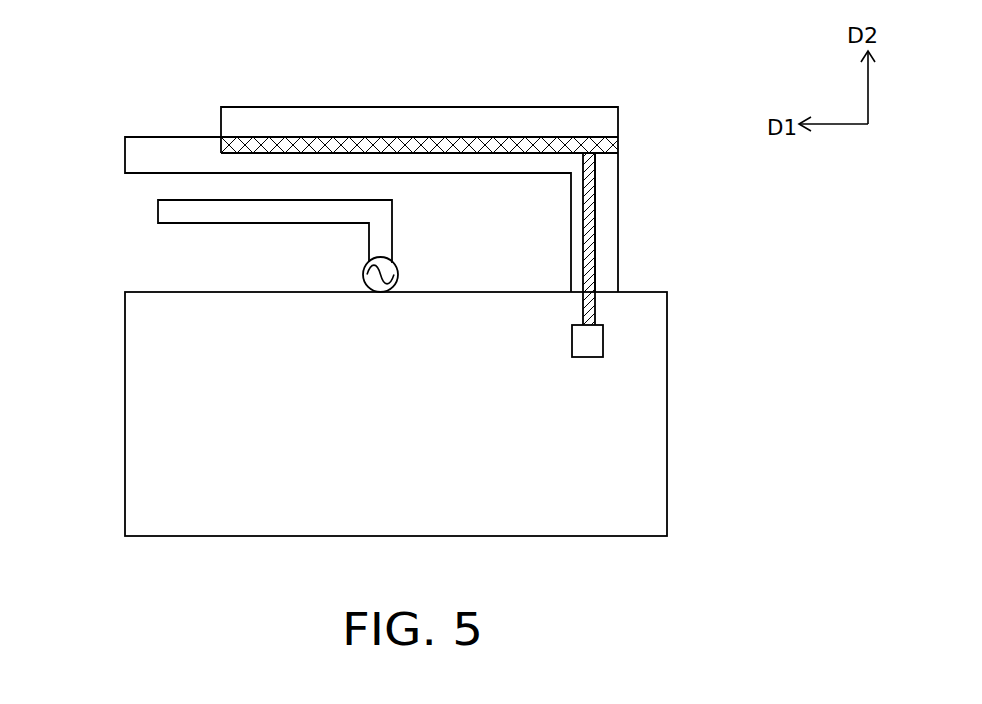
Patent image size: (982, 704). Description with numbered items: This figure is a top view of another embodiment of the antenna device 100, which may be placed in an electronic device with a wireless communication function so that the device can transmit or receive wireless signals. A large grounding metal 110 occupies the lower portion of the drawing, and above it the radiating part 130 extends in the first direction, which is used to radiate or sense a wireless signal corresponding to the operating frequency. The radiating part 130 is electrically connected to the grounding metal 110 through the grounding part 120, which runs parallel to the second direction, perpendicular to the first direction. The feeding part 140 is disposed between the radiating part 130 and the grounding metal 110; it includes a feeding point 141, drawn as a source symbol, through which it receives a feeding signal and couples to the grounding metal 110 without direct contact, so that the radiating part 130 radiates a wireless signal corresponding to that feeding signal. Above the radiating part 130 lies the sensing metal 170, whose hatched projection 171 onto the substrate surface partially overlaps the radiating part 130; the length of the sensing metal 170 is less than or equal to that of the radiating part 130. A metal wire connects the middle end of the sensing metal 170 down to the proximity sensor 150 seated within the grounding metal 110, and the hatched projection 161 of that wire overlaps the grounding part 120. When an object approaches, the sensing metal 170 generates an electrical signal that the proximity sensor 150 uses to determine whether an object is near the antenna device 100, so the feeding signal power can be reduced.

The antenna device 100 is at (785, 577).
The grounding metal 110 is at (125, 430).
The grounding part 120 is at (610, 257).
The radiating part 130 is at (134, 154).
The feeding part 140 is at (165, 214).
The feeding point 141 is at (365, 271).
The proximity sensor 150 is at (593, 342).
The projection of the metal wire 161 is at (590, 207).
The sensing metal 170 is at (612, 117).
The projection of the sensing metal 171 is at (612, 150).